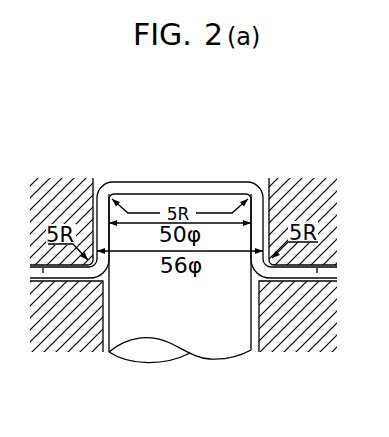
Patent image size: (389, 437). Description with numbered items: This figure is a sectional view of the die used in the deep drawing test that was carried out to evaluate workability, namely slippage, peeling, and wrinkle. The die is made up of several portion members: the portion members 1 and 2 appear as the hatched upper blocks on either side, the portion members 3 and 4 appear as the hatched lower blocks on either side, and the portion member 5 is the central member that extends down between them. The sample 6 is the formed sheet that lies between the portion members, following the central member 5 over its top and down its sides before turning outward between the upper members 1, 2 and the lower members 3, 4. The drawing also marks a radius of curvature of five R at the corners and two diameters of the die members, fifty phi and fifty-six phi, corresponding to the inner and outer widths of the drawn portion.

The die portion member 1 is at (63, 180).
The die portion member 2 is at (302, 178).
The die portion member 3 is at (63, 347).
The die portion member 4 is at (303, 348).
The die portion member 5 is at (148, 351).
The sample 6 is at (157, 182).